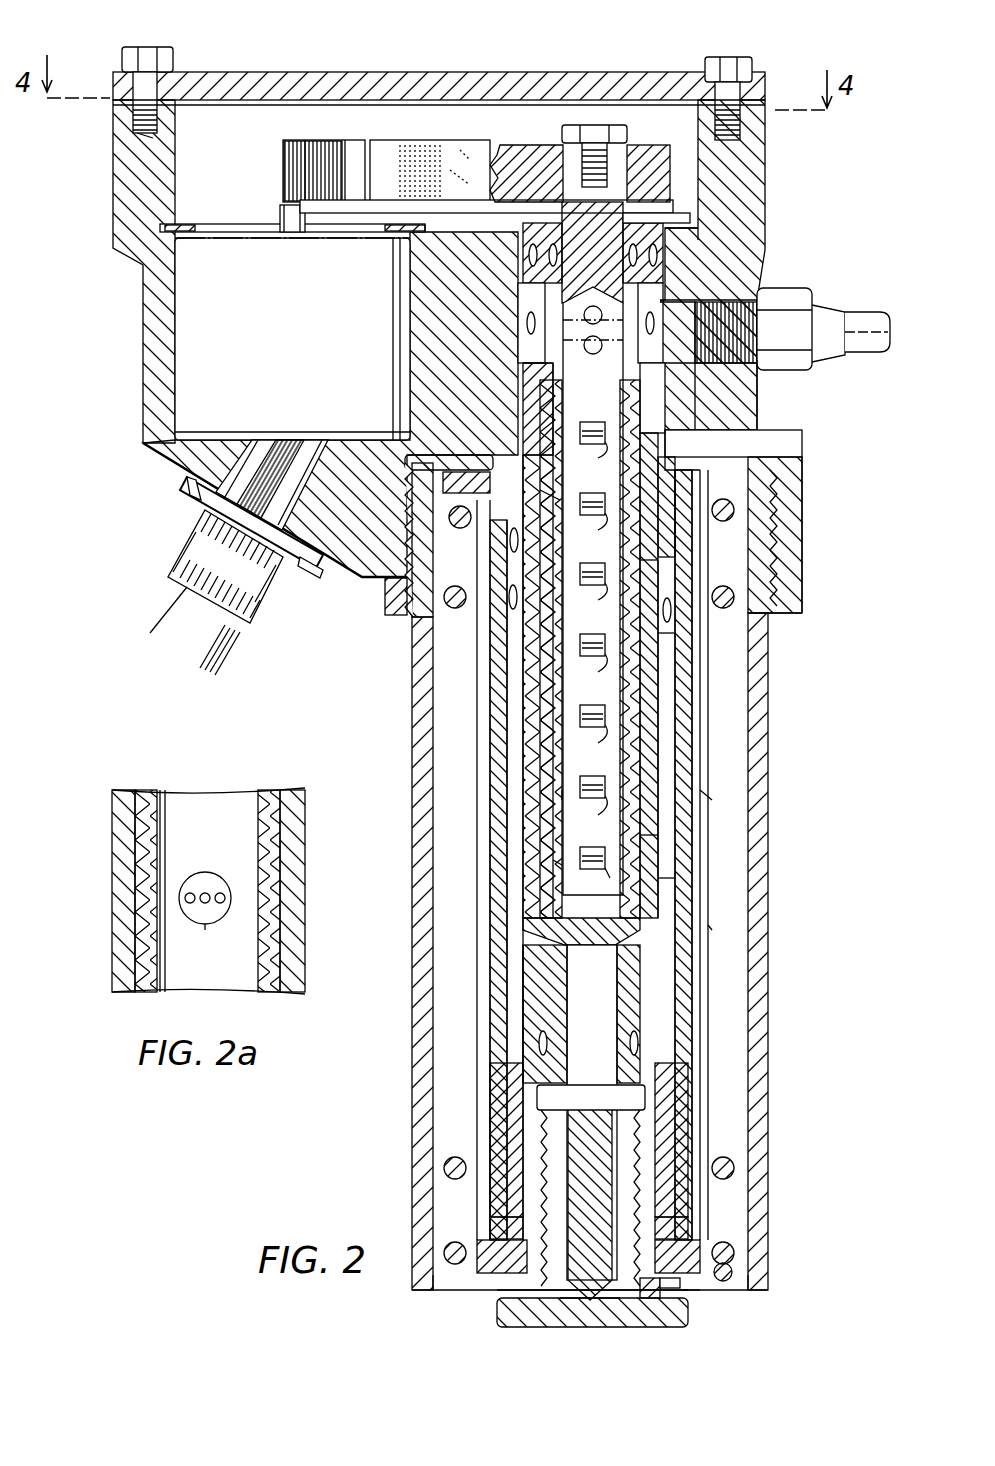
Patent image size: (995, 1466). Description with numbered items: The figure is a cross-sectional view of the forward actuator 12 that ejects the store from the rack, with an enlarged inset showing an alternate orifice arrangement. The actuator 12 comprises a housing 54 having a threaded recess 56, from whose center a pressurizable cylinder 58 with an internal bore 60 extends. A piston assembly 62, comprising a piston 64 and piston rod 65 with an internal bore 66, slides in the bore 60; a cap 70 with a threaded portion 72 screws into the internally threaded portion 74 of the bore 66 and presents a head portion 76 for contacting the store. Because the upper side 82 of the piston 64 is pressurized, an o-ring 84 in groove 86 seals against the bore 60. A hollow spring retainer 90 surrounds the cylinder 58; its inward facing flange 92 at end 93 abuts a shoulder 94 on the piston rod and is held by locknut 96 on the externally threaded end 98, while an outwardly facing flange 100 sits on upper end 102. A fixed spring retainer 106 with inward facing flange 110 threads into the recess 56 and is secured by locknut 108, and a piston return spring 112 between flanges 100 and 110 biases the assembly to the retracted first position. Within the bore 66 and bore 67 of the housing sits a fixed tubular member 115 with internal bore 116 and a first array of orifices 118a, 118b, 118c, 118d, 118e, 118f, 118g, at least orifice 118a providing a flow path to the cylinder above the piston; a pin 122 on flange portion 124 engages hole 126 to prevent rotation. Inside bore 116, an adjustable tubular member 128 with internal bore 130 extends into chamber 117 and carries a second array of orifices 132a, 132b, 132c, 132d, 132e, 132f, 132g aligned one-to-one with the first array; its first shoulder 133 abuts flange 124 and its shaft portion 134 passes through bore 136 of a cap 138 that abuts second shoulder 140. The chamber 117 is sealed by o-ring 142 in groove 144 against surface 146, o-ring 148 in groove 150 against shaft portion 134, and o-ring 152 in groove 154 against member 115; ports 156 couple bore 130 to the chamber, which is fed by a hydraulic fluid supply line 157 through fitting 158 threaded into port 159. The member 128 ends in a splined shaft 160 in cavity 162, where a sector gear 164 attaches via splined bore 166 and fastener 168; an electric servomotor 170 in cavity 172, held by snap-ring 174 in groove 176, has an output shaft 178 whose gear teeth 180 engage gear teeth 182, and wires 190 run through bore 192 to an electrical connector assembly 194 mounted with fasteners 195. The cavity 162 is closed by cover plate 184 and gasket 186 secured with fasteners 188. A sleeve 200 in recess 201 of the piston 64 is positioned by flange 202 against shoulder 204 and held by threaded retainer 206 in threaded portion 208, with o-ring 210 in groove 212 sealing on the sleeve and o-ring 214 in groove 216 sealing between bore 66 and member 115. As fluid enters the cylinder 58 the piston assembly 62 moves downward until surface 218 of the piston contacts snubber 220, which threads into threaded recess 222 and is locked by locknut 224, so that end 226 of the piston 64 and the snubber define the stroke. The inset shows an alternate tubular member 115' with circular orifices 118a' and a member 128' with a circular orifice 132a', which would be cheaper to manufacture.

In FIG. 2, the actuator 12 is at (100, 318).
In FIG. 2, the housing 54 is at (143, 440).
In FIG. 2, the threaded recess 56 is at (385, 585).
In FIG. 2, the pressurizable cylinder 58 is at (700, 770).
In FIG. 2, the internal bore 60 is at (690, 802).
In FIG. 2, the piston assembly 62 is at (642, 712).
In FIG. 2a, the piston assembly 62 is at (290, 846).
In FIG. 2, the piston 64 is at (694, 642).
In FIG. 2, the piston rod 65 is at (662, 880).
In FIG. 2, the internal bore 66 is at (552, 975).
In FIG. 2, the bore 67 is at (528, 440).
In FIG. 2, the cap 70 is at (500, 1322).
In FIG. 2, the threaded portion 72 is at (573, 1175).
In FIG. 2, the internally threaded portion 74 is at (591, 1097).
In FIG. 2, the head portion 76 is at (585, 1327).
In FIG. 2, the upper side 82 is at (730, 368).
In FIG. 2, the o-ring 84 is at (470, 633).
In FIG. 2, the groove 86 is at (795, 580).
In FIG. 2, the hollow spring retainer 90 is at (707, 928).
In FIG. 2, the inward facing flange 92 is at (693, 1293).
In FIG. 2, the end 93 is at (735, 1278).
In FIG. 2, the shoulder 94 is at (645, 1256).
In FIG. 2, the locknut 96 is at (665, 1300).
In FIG. 2, the externally threaded end 98 is at (645, 1300).
In FIG. 2, the outwardly facing flange 100 is at (797, 462).
In FIG. 2, the upper end 102 is at (723, 521).
In FIG. 2, the fixed spring retainer 106 is at (770, 888).
In FIG. 2, the locknut 108 is at (803, 603).
In FIG. 2, the inward facing flange 110 is at (768, 1293).
In FIG. 2, the piston return spring 112 is at (733, 1162).
In FIG. 2, the fixed tubular member 115 is at (696, 842).
In FIG. 2, the internal bore 116 is at (560, 795).
In FIG. 2, the chamber 117 is at (735, 272).
In FIG. 2, the orifice 118a is at (602, 416).
In FIG. 2, the orifice 118b is at (590, 515).
In FIG. 2, the orifice 118c is at (590, 585).
In FIG. 2, the orifice 118d is at (590, 656).
In FIG. 2, the orifice 118e is at (590, 727).
In FIG. 2, the orifice 118f is at (590, 798).
In FIG. 2, the orifice 118g is at (585, 869).
In FIG. 2, the pin 122 is at (690, 352).
In FIG. 2, the flange portion 124 is at (523, 342).
In FIG. 2, the hole 126 is at (670, 352).
In FIG. 2, the adjustable tubular member 128 is at (705, 691).
In FIG. 2, the internal bore 130 is at (556, 866).
In FIG. 2, the orifice 132a is at (605, 456).
In FIG. 2, the orifice 132b is at (607, 533).
In FIG. 2, the orifice 132c is at (607, 604).
In FIG. 2, the orifice 132d is at (607, 677).
In FIG. 2, the orifice 132e is at (607, 747).
In FIG. 2, the orifice 132f is at (606, 821).
In FIG. 2, the orifice 132g is at (616, 882).
In FIG. 2, the first shoulder 133 is at (523, 332).
In FIG. 2, the shaft portion 134 is at (505, 207).
In FIG. 2, the bore 136 is at (615, 220).
In FIG. 2, the cap 138 is at (662, 218).
In FIG. 2, the second shoulder 140 is at (516, 302).
In FIG. 2, the o-ring 142 is at (525, 255).
In FIG. 2, the groove 144 is at (680, 227).
In FIG. 2, the surface 146 is at (665, 250).
In FIG. 2, the o-ring 148 is at (522, 268).
In FIG. 2, the groove 150 is at (690, 215).
In FIG. 2, the o-ring 152 is at (527, 376).
In FIG. 2, the groove 154 is at (660, 440).
In FIG. 2, the ports 156 is at (590, 355).
In FIG. 2, the hydraulic fluid supply line 157 is at (856, 315).
In FIG. 2, the fitting 158 is at (805, 366).
In FIG. 2, the port 159 is at (742, 288).
In FIG. 2, the splined shaft 160 is at (650, 150).
In FIG. 2, the cavity 162 is at (202, 108).
In FIG. 2, the sector gear 164 is at (420, 152).
In FIG. 2, the splined bore 166 is at (553, 165).
In FIG. 2, the fastener 168 is at (588, 125).
In FIG. 2, the electric servomotor 170 is at (176, 362).
In FIG. 2, the cavity 172 is at (160, 300).
In FIG. 2, the snap-ring 174 is at (185, 224).
In FIG. 2, the groove 176 is at (165, 227).
In FIG. 2, the output shaft 178 is at (278, 215).
In FIG. 2, the gear teeth 180 is at (285, 160).
In FIG. 2, the gear teeth 182 is at (335, 134).
In FIG. 2, the cover plate 184 is at (268, 75).
In FIG. 2, the gasket 186 is at (768, 105).
In FIG. 2, the fasteners 188 is at (142, 58).
In FIG. 2, the wires 190 is at (292, 440).
In FIG. 2, the bore 192 is at (318, 440).
In FIG. 2, the electrical connector assembly 194 is at (170, 578).
In FIG. 2, the fasteners 195 is at (186, 484).
In FIG. 2, the sleeve 200 is at (445, 600).
In FIG. 2, the recess 201 is at (545, 500).
In FIG. 2, the flange 202 is at (462, 488).
In FIG. 2, the shoulder 204 is at (480, 525).
In FIG. 2, the threaded retainer 206 is at (680, 462).
In FIG. 2, the threaded portion 208 is at (702, 432).
In FIG. 2, the o-ring 210 is at (728, 565).
In FIG. 2, the groove 212 is at (490, 580).
In FIG. 2, the o-ring 214 is at (553, 1040).
In FIG. 2, the groove 216 is at (628, 1044).
In FIG. 2, the surface 218 is at (682, 665).
In FIG. 2, the snubber 220 is at (668, 1085).
In FIG. 2, the threaded recess 222 is at (690, 1110).
In FIG. 2, the locknut 224 is at (700, 1205).
In FIG. 2, the end 226 is at (762, 395).
In FIG. 2a, the member 128' is at (109, 891).
In FIG. 2a, the tubular member 115' is at (264, 891).
In FIG. 2a, the circular orifices 118a' is at (207, 878).
In FIG. 2a, the circular orifice 132a' is at (213, 944).